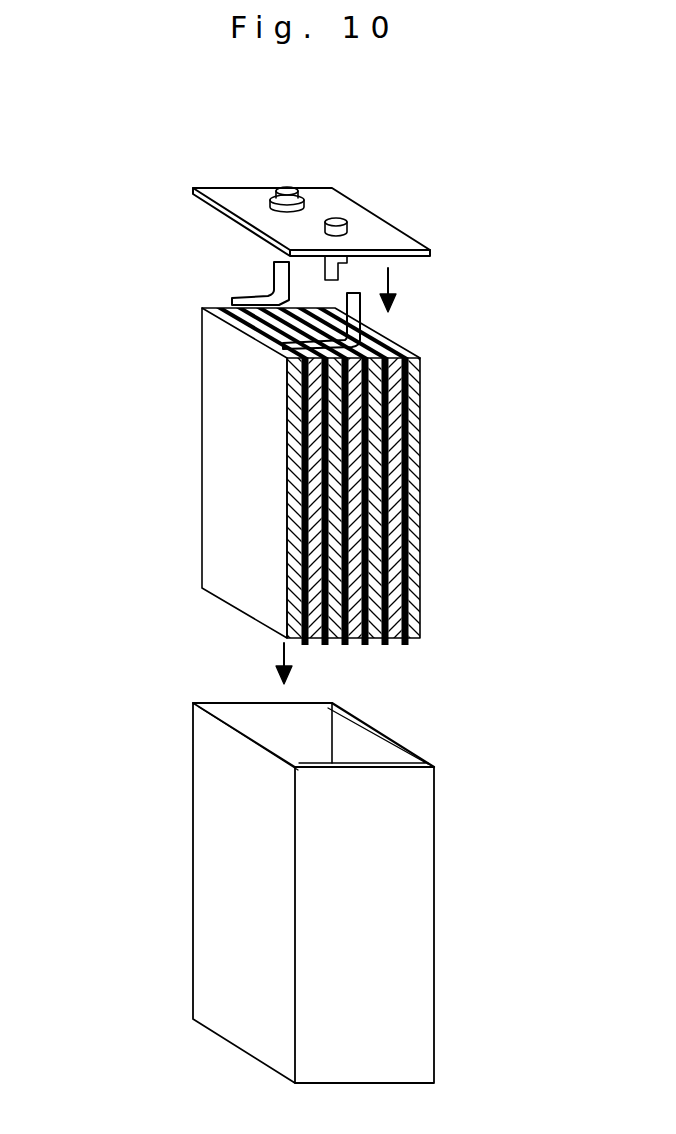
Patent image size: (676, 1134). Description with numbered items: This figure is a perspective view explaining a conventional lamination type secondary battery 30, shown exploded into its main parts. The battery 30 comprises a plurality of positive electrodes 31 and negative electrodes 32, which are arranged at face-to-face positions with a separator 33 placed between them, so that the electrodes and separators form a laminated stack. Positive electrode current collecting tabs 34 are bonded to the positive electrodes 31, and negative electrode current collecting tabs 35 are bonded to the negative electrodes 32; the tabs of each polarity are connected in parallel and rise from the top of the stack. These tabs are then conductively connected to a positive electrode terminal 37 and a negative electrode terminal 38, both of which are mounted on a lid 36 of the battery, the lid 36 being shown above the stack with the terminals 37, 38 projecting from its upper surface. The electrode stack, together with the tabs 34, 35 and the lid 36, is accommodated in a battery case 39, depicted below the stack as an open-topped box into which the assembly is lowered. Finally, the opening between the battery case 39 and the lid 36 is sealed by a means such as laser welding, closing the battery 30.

The lamination type secondary battery 30 is at (93, 183).
The positive electrode 31 is at (403, 573).
The negative electrode 32 is at (420, 528).
The separator 33 is at (385, 480).
The positive electrode current collecting tab 34 is at (277, 283).
The negative electrode current collecting tab 35 is at (363, 316).
The lid 36 is at (390, 238).
The positive electrode terminal 37 is at (292, 190).
The negative electrode terminal 38 is at (340, 219).
The battery case 39 is at (405, 948).